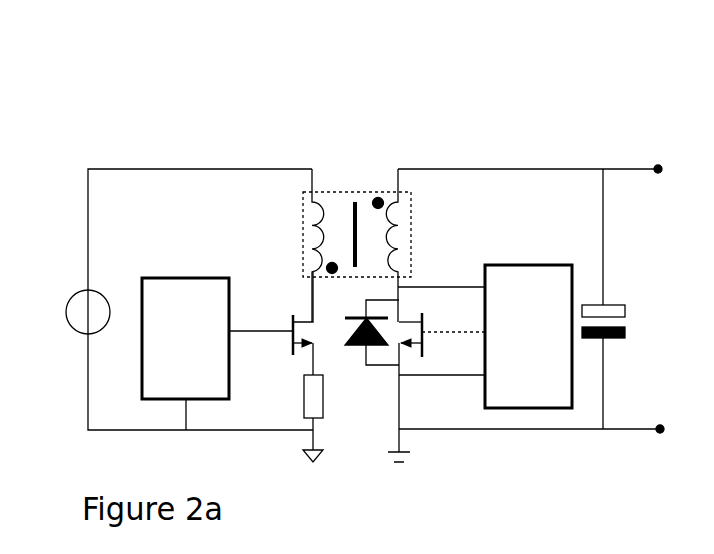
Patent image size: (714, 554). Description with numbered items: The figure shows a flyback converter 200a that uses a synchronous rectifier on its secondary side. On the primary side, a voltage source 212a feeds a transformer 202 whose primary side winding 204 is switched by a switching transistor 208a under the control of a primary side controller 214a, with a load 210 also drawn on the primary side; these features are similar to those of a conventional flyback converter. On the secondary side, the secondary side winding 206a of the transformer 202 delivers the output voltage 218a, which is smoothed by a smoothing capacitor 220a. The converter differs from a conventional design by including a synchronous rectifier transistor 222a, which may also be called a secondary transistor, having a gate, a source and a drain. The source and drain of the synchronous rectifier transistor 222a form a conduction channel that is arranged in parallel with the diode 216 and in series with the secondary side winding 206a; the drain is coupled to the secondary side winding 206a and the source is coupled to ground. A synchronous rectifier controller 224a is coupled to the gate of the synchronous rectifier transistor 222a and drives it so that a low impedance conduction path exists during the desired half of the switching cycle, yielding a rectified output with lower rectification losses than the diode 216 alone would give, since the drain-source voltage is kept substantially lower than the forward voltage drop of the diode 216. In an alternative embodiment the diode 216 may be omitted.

The flyback converter 200a is at (52, 105).
The transformer 202 is at (365, 192).
The primary side winding 204 is at (317, 200).
The secondary side winding 206a is at (400, 200).
The switching transistor 208a is at (292, 312).
The load 210 is at (303, 390).
The voltage source 212a is at (70, 305).
The primary side controller 214a is at (217, 354).
The diode 216 is at (363, 347).
The output voltage 218a is at (656, 166).
The smoothing capacitor 220a is at (604, 340).
The synchronous rectifier transistor 222a is at (418, 350).
The synchronous rectifier controller 224a is at (528, 336).